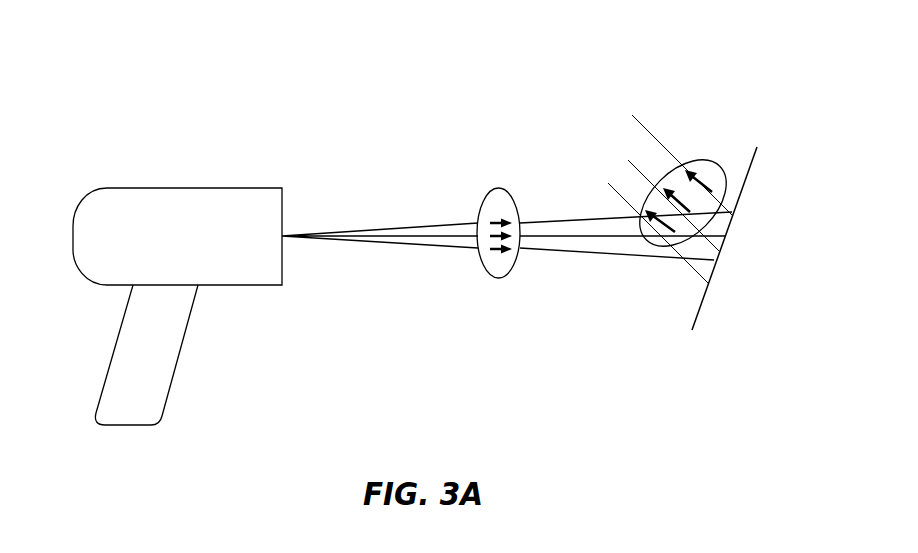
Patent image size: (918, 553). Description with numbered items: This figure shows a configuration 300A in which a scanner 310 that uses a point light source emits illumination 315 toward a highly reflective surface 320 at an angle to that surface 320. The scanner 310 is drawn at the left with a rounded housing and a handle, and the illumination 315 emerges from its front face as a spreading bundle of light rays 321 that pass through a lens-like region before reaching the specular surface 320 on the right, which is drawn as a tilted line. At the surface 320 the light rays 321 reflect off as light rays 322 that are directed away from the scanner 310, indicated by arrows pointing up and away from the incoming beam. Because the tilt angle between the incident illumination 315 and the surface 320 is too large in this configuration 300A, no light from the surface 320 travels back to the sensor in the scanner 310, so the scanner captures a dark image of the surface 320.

The configuration 300A is at (148, 87).
The scanner 310 is at (138, 188).
The illumination 315 is at (283, 237).
The highly reflective surface 320 is at (757, 147).
The light rays 321 is at (512, 202).
The light rays 322 is at (699, 158).